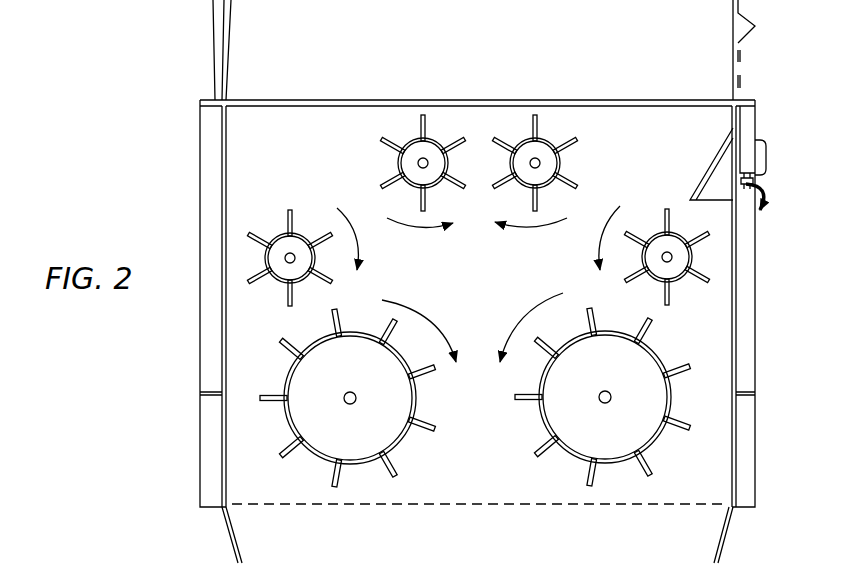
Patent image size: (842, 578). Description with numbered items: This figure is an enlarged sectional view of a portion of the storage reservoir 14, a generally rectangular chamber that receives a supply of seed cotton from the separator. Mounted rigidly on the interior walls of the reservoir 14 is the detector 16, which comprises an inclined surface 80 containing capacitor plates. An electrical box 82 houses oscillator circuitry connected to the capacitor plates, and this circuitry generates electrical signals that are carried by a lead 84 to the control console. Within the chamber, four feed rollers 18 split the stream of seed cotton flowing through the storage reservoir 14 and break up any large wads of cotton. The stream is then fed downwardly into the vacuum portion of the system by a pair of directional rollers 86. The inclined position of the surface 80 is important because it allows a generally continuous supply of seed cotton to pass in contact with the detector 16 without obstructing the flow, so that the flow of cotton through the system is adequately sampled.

The storage reservoir 14 is at (196, 110).
The detector 16 is at (718, 140).
The feed rollers 18 is at (398, 163).
The inclined surface 80 is at (705, 178).
The electrical box 82 is at (766, 148).
The lead 84 is at (762, 212).
The directional rollers 86 is at (418, 398).